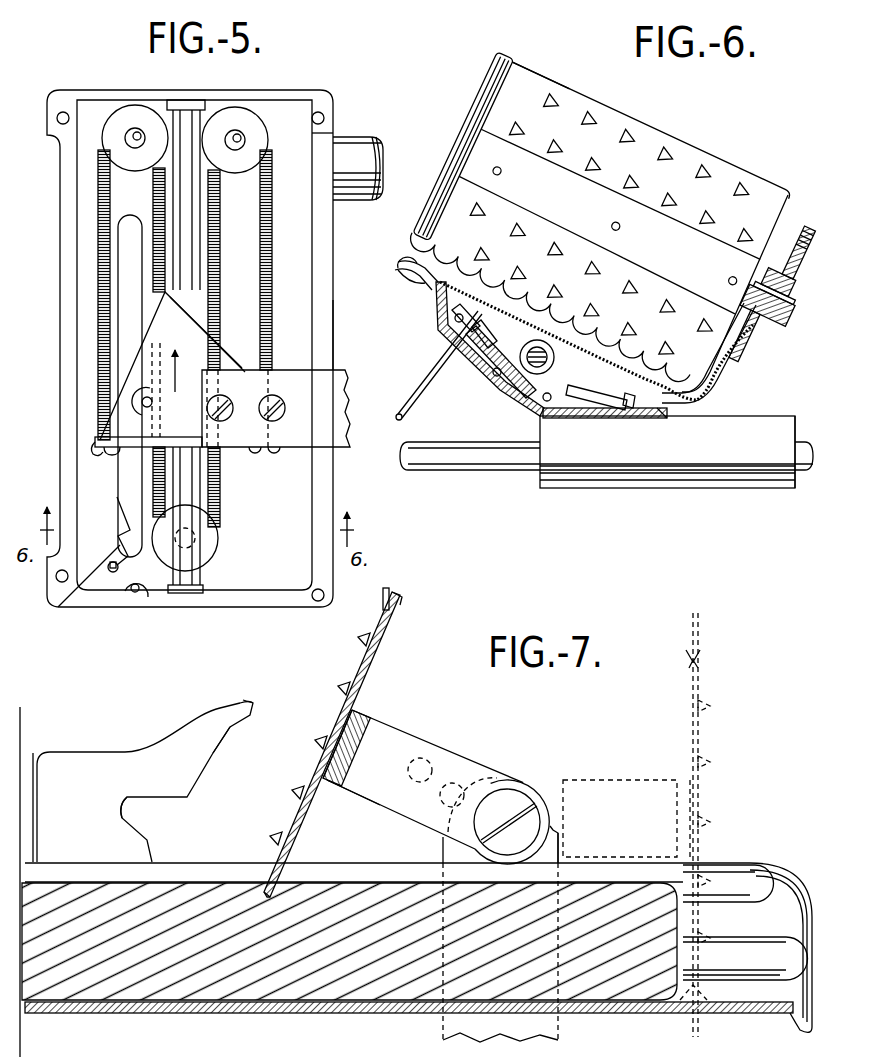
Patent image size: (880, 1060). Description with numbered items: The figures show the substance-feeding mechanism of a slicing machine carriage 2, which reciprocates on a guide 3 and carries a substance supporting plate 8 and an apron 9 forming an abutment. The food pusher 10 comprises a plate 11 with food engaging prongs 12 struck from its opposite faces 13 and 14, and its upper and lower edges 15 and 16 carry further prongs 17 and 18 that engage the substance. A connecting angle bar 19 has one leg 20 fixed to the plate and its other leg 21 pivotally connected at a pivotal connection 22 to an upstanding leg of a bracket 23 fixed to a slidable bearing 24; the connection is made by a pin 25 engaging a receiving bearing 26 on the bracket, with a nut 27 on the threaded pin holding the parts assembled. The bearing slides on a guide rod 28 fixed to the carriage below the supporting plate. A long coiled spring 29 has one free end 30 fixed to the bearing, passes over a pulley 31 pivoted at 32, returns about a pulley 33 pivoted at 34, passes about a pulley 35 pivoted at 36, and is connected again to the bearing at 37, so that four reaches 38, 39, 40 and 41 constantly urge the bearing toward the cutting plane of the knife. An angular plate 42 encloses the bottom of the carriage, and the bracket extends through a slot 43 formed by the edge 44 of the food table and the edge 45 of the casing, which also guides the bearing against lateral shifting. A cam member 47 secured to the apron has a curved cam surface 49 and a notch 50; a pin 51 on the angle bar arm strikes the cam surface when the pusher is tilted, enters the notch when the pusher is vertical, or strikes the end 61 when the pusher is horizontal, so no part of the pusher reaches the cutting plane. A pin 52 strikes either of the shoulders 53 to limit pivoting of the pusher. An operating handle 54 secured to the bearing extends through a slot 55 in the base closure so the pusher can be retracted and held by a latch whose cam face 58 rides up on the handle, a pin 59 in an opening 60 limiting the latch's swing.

In FIG. 5, the carriage 2 is at (335, 117).
In FIG. 6, the carriage 2 is at (397, 279).
In FIG. 6, the guide 3 is at (520, 471).
In FIG. 6, the substance supporting plate 8 is at (397, 257).
In FIG. 7, the substance supporting plate 8 is at (235, 1002).
In FIG. 6, the apron 9 is at (728, 338).
In FIG. 7, the apron 9 is at (748, 862).
In FIG. 6, the food pusher 10 is at (491, 130).
In FIG. 7, the food pusher 10 is at (396, 617).
In FIG. 7, the plate 11 is at (370, 668).
In FIG. 7, the food engaging prongs 12 is at (360, 638).
In FIG. 7, the face of plate 13 is at (345, 670).
In FIG. 6, the face of plate 14 is at (646, 139).
In FIG. 7, the face of plate 14 is at (365, 690).
In FIG. 6, the upper edge 15 is at (550, 53).
In FIG. 7, the upper edge 15 is at (403, 598).
In FIG. 6, the lower edge 16 is at (558, 289).
In FIG. 7, the lower edge 16 is at (262, 892).
In FIG. 7, the prongs 17 is at (392, 588).
In FIG. 7, the prongs 18 is at (705, 640).
In FIG. 6, the connecting angle bar 19 is at (597, 230).
In FIG. 7, the connecting angle bar 19 is at (392, 740).
In FIG. 6, the leg 20 is at (705, 237).
In FIG. 7, the leg 20 is at (323, 782).
In FIG. 6, the leg 21 is at (791, 238).
In FIG. 7, the leg 21 is at (458, 768).
In FIG. 7, the pivotal connection 22 is at (522, 792).
In FIG. 5, the bracket 23 is at (307, 438).
In FIG. 6, the bracket 23 is at (760, 345).
In FIG. 7, the bracket 23 is at (440, 1036).
In FIG. 5, the slidable bearing 24 is at (213, 353).
In FIG. 6, the slidable bearing 24 is at (582, 400).
In FIG. 6, the pin 25 is at (781, 305).
In FIG. 6, the receiving bearing 26 is at (792, 278).
In FIG. 6, the nut 27 is at (782, 319).
In FIG. 5, the guide rod 28 is at (188, 222).
In FIG. 6, the guide rod 28 is at (500, 392).
In FIG. 5, the coiled spring 29 is at (90, 229).
In FIG. 6, the coiled spring 29 is at (437, 310).
In FIG. 5, the free end of spring 30 is at (92, 441).
In FIG. 5, the pulley 31 is at (137, 117).
In FIG. 6, the pulley 31 is at (466, 326).
In FIG. 5, the pivot 32 is at (125, 138).
In FIG. 5, the pulley 33 is at (210, 551).
In FIG. 6, the pulley 33 is at (494, 378).
In FIG. 5, the pivot 34 is at (195, 535).
In FIG. 5, the pulley 35 is at (238, 118).
In FIG. 6, the pulley 35 is at (598, 402).
In FIG. 5, the pivot 36 is at (246, 141).
In FIG. 6, the pivot 36 is at (552, 352).
In FIG. 5, the spring end connection 37 is at (262, 458).
In FIG. 5, the spring reach 38 is at (117, 269).
In FIG. 5, the spring reach 39 is at (167, 257).
In FIG. 5, the spring reach 40 is at (219, 263).
In FIG. 5, the spring reach 41 is at (270, 277).
In FIG. 6, the angular plate 42 is at (437, 330).
In FIG. 6, the slot 43 is at (680, 440).
In FIG. 6, the edge of food table 44 is at (684, 420).
In FIG. 5, the edge of casing 45 is at (331, 334).
In FIG. 6, the edge of casing 45 is at (660, 420).
In FIG. 7, the cam member 47 is at (80, 752).
In FIG. 7, the curved cam surface 49 is at (215, 754).
In FIG. 7, the notch 50 is at (135, 802).
In FIG. 7, the pin 51 is at (432, 763).
In FIG. 7, the pin 52 is at (487, 778).
In FIG. 7, the shoulders 53 is at (567, 792).
In FIG. 6, the operating handle 54 is at (401, 410).
In FIG. 6, the slot 55 is at (470, 383).
In FIG. 5, the cam face 58 is at (80, 566).
In FIG. 5, the pin 59 is at (137, 597).
In FIG. 5, the opening 60 is at (108, 575).
In FIG. 7, the end of cam member 61 is at (250, 702).